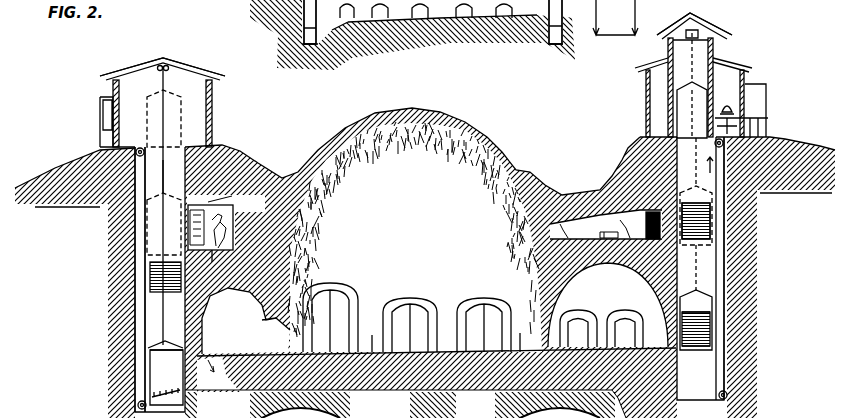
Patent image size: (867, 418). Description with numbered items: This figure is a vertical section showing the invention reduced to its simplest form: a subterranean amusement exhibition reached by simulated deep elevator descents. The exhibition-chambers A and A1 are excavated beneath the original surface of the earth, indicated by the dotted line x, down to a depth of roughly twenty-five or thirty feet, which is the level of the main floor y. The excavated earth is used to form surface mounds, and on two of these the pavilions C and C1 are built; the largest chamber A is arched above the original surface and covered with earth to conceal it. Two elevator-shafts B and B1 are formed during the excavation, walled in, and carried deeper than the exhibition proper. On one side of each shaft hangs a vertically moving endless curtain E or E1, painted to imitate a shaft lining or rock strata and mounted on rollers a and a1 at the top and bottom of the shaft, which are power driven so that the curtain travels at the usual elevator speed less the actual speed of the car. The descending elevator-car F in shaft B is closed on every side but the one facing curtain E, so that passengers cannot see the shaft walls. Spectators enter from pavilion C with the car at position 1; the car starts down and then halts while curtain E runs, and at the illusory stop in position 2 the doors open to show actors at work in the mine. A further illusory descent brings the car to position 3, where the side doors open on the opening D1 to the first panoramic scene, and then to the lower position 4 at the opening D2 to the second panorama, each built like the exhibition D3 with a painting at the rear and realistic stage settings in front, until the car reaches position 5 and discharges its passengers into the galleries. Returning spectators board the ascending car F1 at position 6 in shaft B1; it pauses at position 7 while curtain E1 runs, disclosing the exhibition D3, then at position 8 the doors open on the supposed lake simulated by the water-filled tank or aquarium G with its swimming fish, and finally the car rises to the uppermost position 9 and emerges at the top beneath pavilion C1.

The position of the car at the pavilion 1 is at (457, 227).
The position of the car at the mine level 2 is at (610, 224).
The position of the car at the first panorama 3 is at (78, 360).
The cage 4 is at (708, 318).
The position of the car at the end of the descent 5 is at (596, 6).
The position of the ascending car 6 is at (305, 34).
The position of the car during the illusory ascent 7 is at (165, 277).
The position of the car at the lake view 8 is at (164, 224).
The cage 9 is at (164, 118).
The roller a is at (718, 146).
The roller a1 is at (720, 392).
The exhibition-chamber A is at (370, 238).
The exhibition-chamber A1 is at (608, 305).
The elevator-shaft B is at (698, 209).
The elevator-shaft B1 is at (170, 176).
The pavilion C is at (203, 263).
The pavilion C1 is at (443, 63).
The opening to the panoramic scene D1 is at (712, 222).
The opening to the panorama D2 is at (708, 338).
The exhibition D3 is at (107, 279).
The endless curtain E is at (722, 280).
The endless curtain E1 is at (137, 304).
The elevator-car F is at (696, 320).
The ascending car F1 is at (166, 339).
The tank or aquarium G is at (222, 223).
The original surface of the earth x is at (433, 192).
The main floor y is at (442, 337).